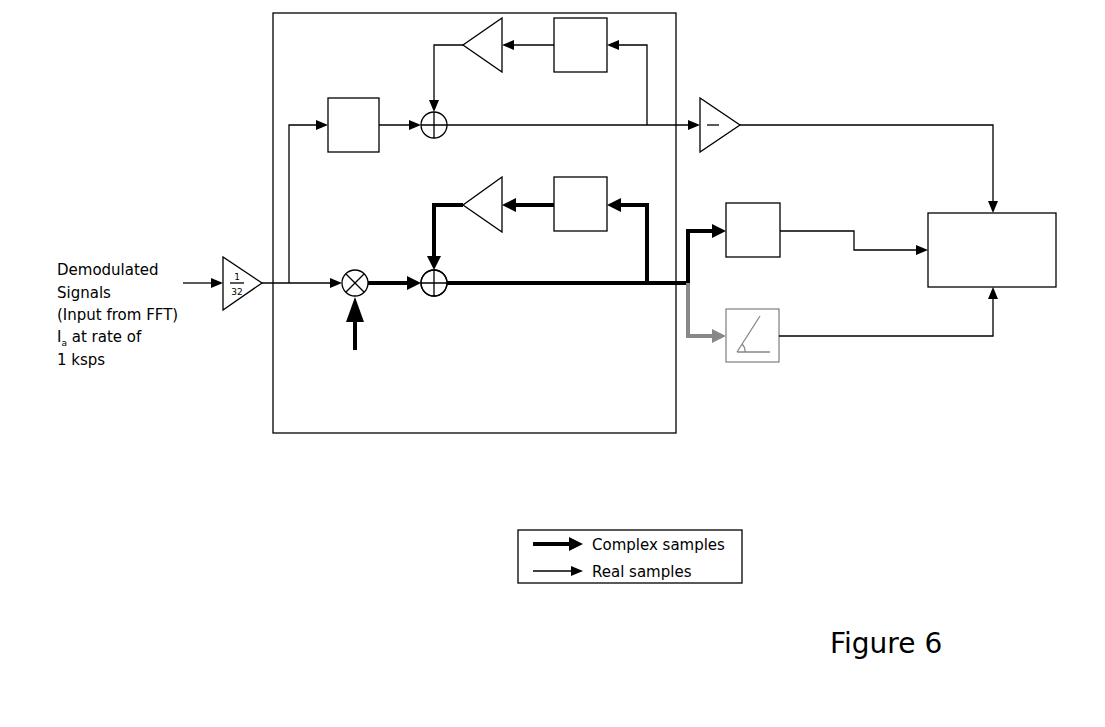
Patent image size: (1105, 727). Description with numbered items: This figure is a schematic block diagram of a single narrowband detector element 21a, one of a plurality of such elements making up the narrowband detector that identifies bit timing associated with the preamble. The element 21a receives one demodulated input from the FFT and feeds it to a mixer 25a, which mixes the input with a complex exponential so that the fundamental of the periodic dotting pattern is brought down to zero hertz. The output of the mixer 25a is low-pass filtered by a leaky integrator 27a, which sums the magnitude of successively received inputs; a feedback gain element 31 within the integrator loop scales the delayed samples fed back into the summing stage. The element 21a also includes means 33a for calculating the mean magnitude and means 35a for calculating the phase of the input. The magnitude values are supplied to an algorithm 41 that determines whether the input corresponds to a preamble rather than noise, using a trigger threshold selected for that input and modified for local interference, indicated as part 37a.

The narrowband detector element 21a is at (494, 223).
The mixer 25a is at (345, 297).
The leaky integrator 27a is at (437, 296).
The feedback gain element 31 is at (482, 125).
The means for calculating mean magnitude 33a is at (752, 203).
The means for calculating phase 35a is at (752, 362).
The trigger threshold part 37a is at (833, 80).
The algorithm 41 is at (992, 250).